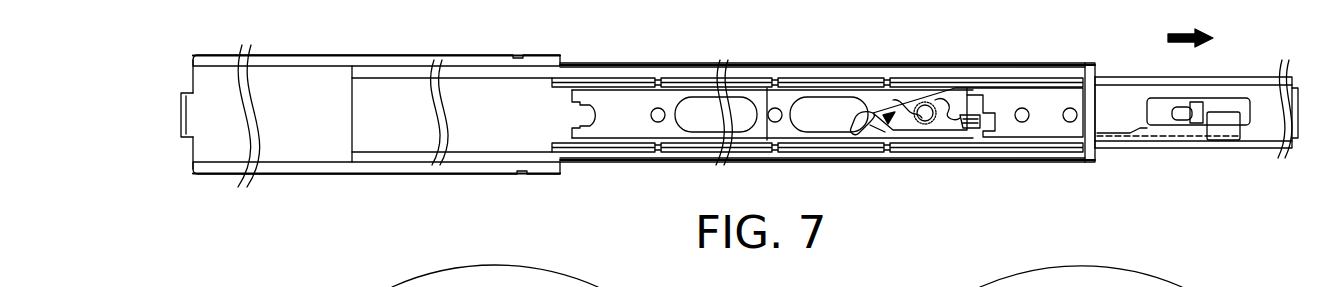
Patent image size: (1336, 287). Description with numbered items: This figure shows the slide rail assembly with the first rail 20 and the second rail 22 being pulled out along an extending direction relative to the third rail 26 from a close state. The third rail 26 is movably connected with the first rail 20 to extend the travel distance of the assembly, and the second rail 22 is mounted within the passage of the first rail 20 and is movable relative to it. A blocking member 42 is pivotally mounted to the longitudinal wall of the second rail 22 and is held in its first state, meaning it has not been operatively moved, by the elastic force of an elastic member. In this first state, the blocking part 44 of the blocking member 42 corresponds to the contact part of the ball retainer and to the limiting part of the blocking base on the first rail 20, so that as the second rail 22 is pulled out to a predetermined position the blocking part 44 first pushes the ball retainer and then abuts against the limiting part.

The third rail 26 is at (318, 175).
The first rail 20 is at (623, 165).
The second rail 22 is at (1243, 152).
The blocking member 42 is at (893, 130).
The blocking part 44 is at (970, 110).